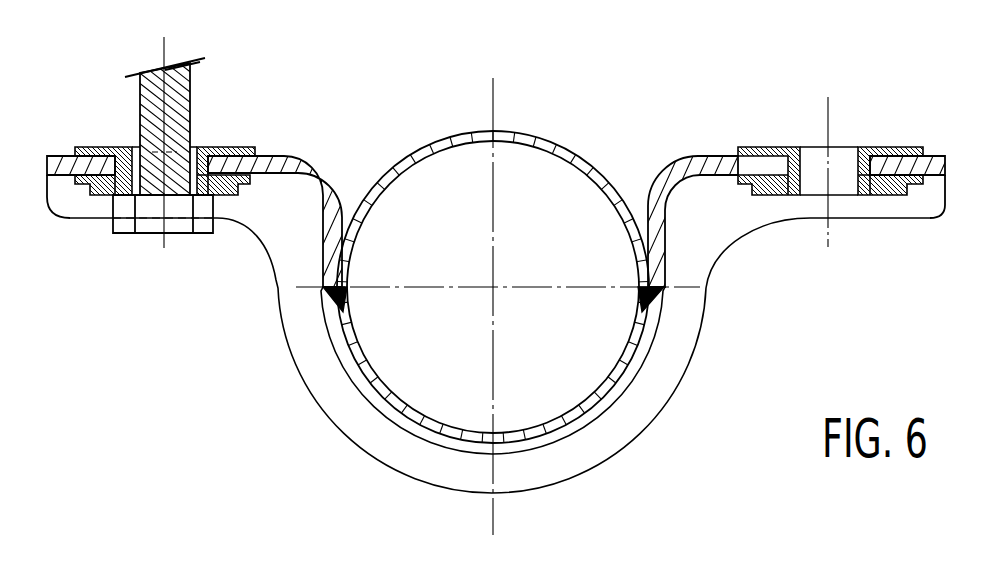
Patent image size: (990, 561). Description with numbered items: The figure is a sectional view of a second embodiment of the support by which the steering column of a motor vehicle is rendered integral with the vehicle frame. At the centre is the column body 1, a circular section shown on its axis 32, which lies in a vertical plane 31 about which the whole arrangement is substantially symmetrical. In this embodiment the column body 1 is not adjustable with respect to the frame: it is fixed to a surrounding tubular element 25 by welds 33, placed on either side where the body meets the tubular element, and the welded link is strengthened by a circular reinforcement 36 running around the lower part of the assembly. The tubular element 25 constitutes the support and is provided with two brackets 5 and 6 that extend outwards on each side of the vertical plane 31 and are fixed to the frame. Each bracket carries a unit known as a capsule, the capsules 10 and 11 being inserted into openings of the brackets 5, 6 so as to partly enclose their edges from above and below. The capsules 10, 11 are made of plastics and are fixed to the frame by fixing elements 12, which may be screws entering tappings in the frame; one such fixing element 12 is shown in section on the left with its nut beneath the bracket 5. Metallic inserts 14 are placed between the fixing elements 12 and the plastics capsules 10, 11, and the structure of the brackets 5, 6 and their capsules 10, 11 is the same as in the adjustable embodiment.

The body 1 is at (562, 143).
The bracket 5 is at (316, 162).
The bracket 6 is at (662, 172).
The capsule 10 is at (74, 178).
The capsule 11 is at (917, 190).
The fixing element 12 is at (153, 230).
The metallic insert 14 is at (100, 198).
The tubular element 25 is at (350, 387).
The vertical plane 31 is at (497, 78).
The axis 32 is at (496, 290).
The weld 33 is at (322, 297).
The circular reinforcement 36 is at (607, 442).